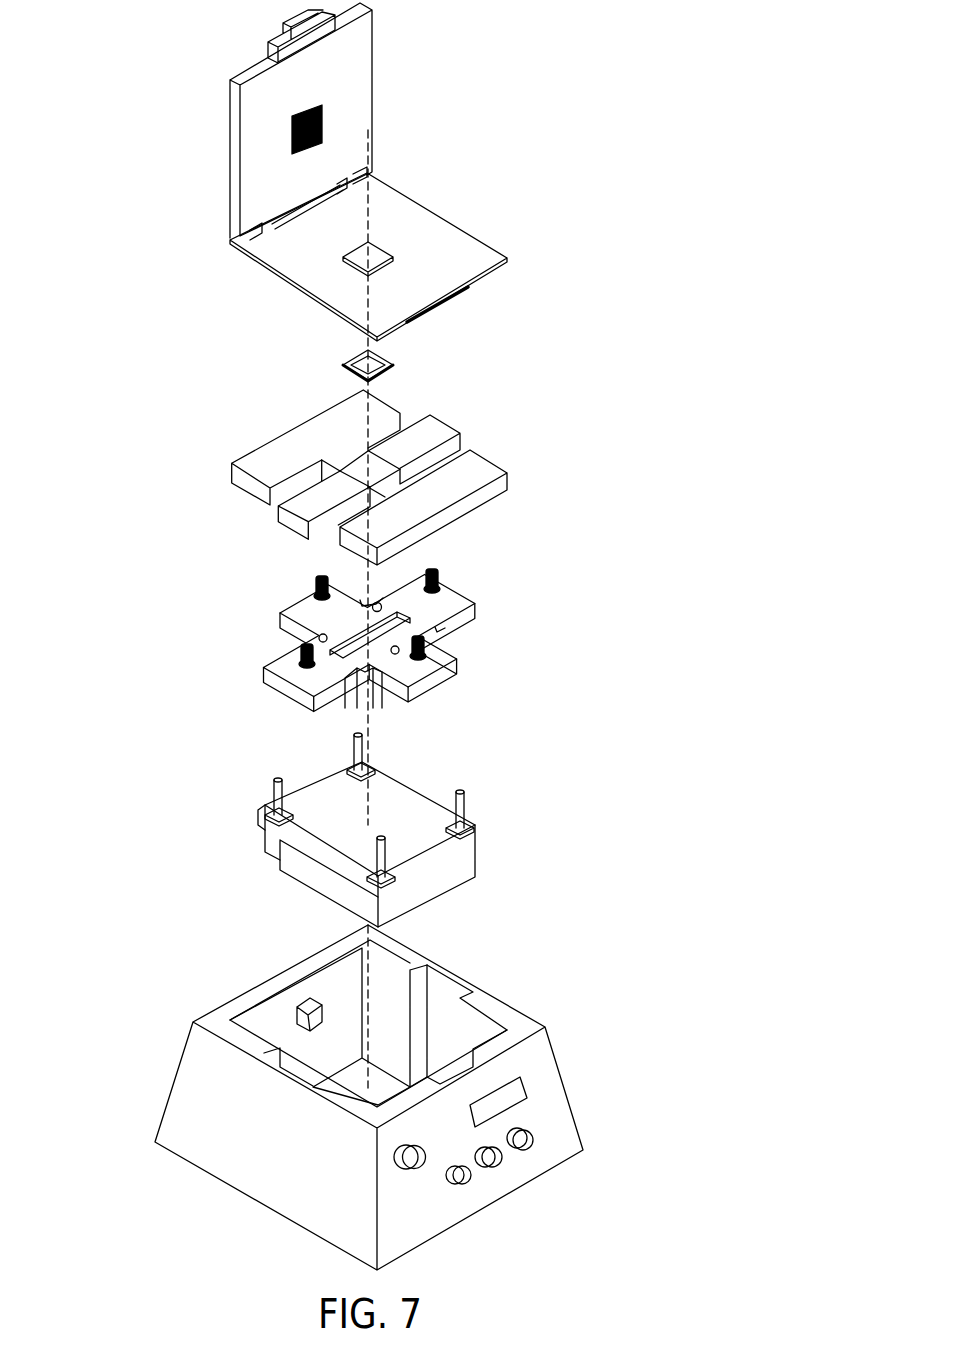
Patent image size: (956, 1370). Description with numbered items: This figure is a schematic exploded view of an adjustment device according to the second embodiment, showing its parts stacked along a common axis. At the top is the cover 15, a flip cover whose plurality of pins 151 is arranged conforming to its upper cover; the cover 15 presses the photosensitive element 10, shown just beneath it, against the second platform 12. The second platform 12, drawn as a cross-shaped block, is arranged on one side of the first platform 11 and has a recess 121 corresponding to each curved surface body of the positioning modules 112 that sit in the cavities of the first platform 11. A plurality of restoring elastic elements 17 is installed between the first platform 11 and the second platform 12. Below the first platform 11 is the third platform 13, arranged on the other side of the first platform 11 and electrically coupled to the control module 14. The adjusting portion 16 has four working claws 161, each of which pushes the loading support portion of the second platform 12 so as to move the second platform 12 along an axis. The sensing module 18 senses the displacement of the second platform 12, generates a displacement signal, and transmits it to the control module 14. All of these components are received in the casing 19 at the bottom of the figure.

The photosensitive element 10 is at (393, 365).
The first platform 11 is at (418, 624).
The positioning module 112 is at (397, 650).
The second platform 12 is at (428, 477).
The recess 121 is at (473, 480).
The third platform 13 is at (414, 840).
The control module 14 is at (307, 787).
The cover 15 is at (380, 172).
The pin 151 is at (322, 115).
The adjusting portion 16 is at (443, 882).
The working claw 161 is at (462, 806).
The restoring elastic element 17 is at (437, 583).
The sensing module 18 is at (300, 1002).
The casing 19 is at (374, 1094).